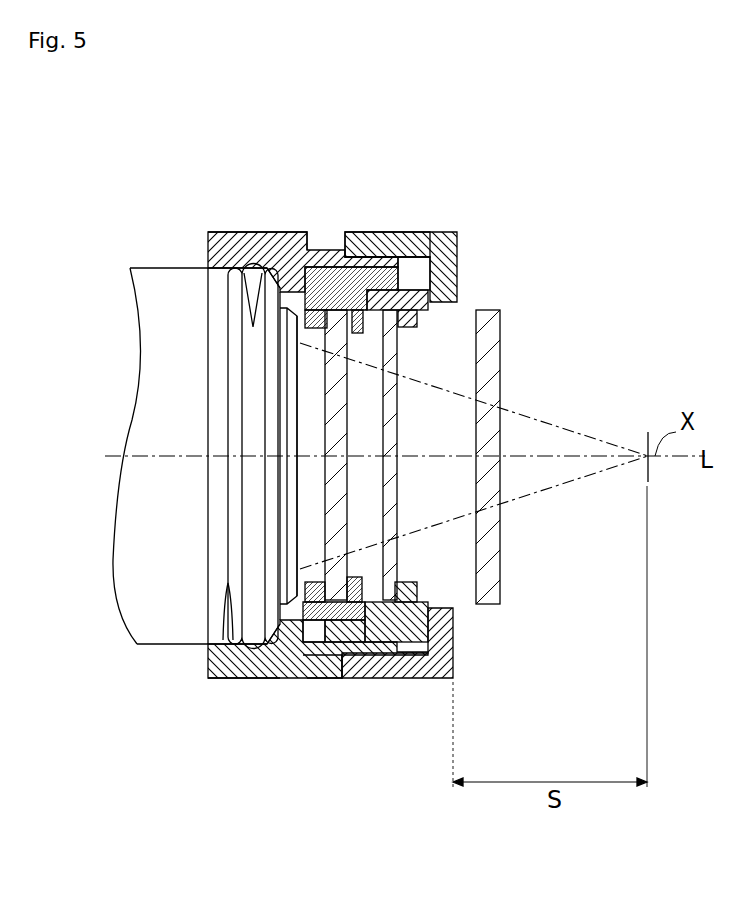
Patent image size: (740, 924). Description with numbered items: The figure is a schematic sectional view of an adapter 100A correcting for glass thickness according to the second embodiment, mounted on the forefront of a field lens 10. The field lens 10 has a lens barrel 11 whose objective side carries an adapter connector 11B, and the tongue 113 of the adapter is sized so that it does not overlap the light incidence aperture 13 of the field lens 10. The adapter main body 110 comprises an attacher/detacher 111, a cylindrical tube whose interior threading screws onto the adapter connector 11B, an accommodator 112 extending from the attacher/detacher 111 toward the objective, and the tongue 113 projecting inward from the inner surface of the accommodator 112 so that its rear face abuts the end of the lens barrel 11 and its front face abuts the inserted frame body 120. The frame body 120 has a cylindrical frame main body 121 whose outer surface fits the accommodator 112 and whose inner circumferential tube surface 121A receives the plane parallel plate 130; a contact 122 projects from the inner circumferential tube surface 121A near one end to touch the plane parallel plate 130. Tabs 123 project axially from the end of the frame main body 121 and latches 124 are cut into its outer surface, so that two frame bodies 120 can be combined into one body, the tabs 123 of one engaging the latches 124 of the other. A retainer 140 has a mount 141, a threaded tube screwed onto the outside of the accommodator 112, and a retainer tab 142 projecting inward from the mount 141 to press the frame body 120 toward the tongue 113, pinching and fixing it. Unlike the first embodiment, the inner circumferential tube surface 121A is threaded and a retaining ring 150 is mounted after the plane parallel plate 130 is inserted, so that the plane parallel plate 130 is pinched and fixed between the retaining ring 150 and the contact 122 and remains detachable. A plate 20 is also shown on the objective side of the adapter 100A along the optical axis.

The field lens 10 is at (137, 645).
The lens barrel 11 is at (154, 270).
The adapter connector 11B is at (227, 302).
The light incidence aperture 13 is at (293, 527).
The image sensor plate 20 is at (502, 326).
The adapter correcting for glass thickness 100A is at (330, 160).
The adapter main body 110 is at (300, 240).
The attacher/detacher 111 is at (233, 232).
The accommodator 112 is at (327, 240).
The tongue 113 is at (282, 318).
The frame body 120 is at (358, 265).
The frame main body 121 is at (292, 292).
The inner circumferential tube surface 121A is at (298, 347).
The contact 122 is at (400, 320).
The tabs 123 is at (332, 636).
The latches 124 is at (316, 640).
The plane parallel plate 130 is at (397, 362).
The retainer 140 is at (420, 232).
The mount 141 is at (392, 232).
The retainer tab 142 is at (418, 262).
The retaining ring 150 is at (416, 320).